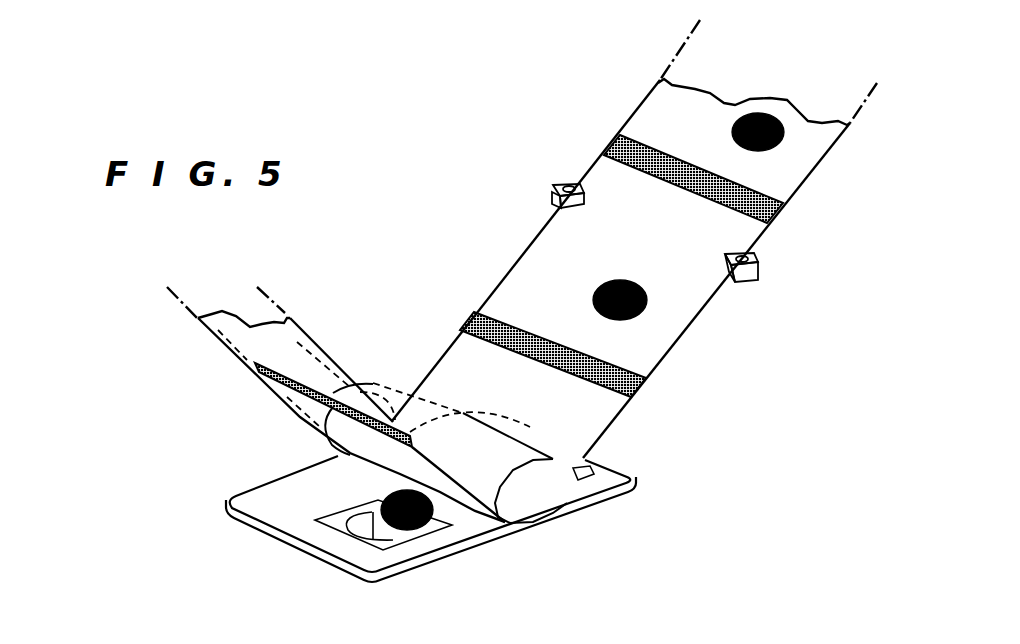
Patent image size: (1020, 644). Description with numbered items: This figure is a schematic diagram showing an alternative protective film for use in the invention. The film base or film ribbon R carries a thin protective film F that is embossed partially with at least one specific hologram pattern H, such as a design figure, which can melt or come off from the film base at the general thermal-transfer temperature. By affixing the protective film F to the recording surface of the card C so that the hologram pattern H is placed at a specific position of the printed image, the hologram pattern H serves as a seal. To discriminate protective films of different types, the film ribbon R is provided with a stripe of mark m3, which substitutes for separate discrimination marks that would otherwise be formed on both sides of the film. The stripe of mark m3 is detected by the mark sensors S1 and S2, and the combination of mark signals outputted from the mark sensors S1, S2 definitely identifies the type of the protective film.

The film ribbon R is at (809, 163).
The hologram pattern H is at (773, 152).
The stripe of mark m3 is at (607, 147).
The mark sensor S1 is at (758, 261).
The mark sensor S2 is at (571, 183).
The card C is at (617, 473).
The protective film F is at (268, 509).